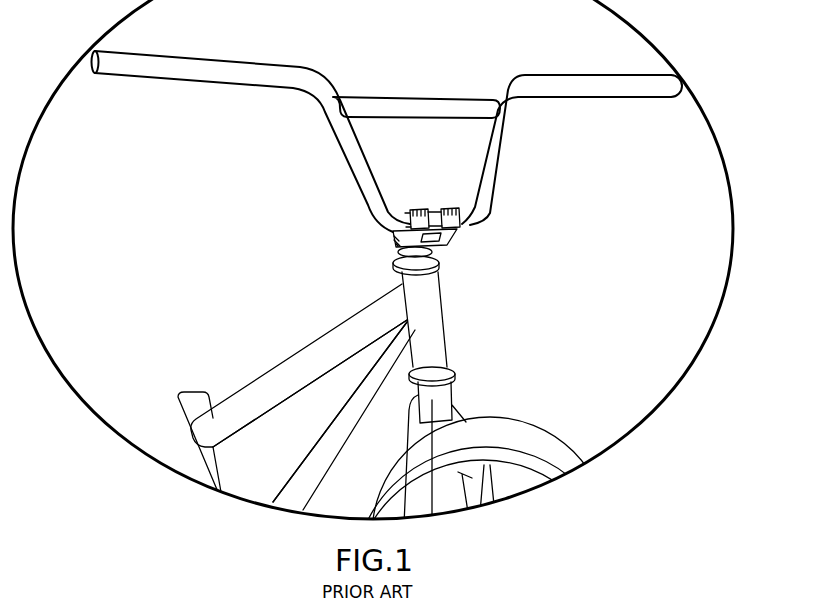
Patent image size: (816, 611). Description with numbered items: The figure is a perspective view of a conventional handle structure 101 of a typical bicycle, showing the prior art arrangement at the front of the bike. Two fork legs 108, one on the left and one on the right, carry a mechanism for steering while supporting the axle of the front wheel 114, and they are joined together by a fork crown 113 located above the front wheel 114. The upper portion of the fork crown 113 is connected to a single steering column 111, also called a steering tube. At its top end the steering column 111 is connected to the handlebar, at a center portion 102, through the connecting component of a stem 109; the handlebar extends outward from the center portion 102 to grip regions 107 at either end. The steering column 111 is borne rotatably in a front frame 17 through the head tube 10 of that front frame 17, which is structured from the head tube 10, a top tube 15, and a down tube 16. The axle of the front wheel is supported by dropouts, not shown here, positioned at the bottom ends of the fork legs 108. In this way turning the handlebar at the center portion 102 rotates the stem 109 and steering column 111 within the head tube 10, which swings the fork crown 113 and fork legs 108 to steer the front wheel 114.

The bicycle front end (prior art) 101 is at (690, 81).
The center portion 102 is at (440, 216).
The handlebar grips 107 is at (192, 72).
The fork legs 108 is at (410, 103).
The stem 109 is at (464, 225).
The steering column 111 is at (428, 254).
The fork crown 113 is at (444, 391).
The front wheel 114 is at (531, 428).
The head tube 10 is at (405, 304).
The top tube 15 is at (362, 334).
The down tube 16 is at (382, 378).
The front frame 17 is at (303, 381).